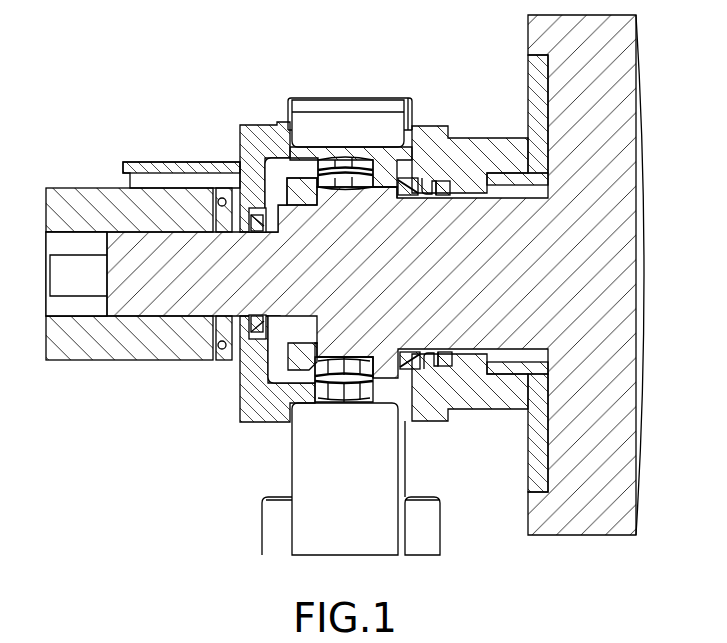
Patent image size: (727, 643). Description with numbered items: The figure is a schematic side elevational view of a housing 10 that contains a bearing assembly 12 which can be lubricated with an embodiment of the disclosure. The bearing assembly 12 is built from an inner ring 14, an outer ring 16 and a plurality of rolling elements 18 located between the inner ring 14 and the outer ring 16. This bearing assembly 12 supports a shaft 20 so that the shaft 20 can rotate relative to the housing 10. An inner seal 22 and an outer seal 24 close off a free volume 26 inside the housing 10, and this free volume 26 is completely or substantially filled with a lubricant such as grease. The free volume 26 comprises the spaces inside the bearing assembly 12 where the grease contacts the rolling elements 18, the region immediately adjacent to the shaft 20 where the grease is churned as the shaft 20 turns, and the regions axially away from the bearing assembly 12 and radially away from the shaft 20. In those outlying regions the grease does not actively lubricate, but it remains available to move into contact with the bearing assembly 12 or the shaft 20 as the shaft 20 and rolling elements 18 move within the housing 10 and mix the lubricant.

The housing 10 is at (503, 152).
The bearing assembly 12 is at (349, 148).
The inner ring 14 is at (367, 197).
The outer ring 16 is at (327, 157).
The rolling elements 18 is at (325, 168).
The shaft 20 is at (465, 322).
The inner seal 22 is at (410, 183).
The outer seal 24 is at (260, 213).
The free volume 26 is at (283, 173).